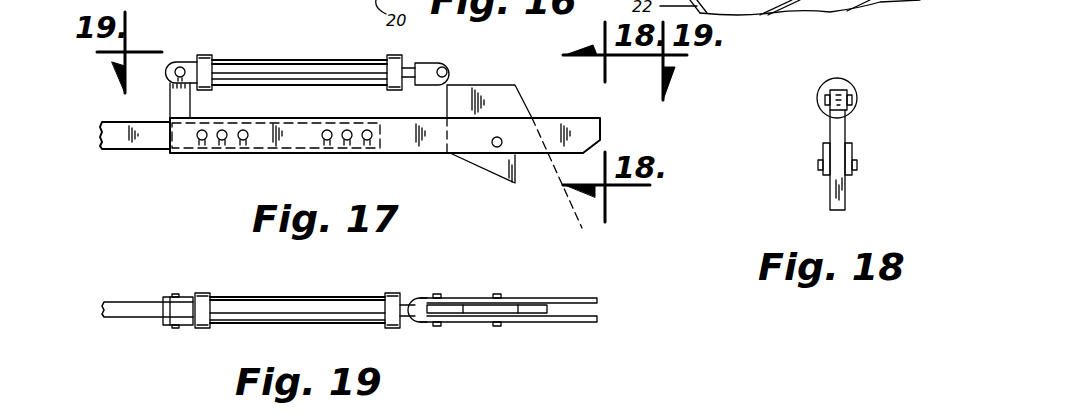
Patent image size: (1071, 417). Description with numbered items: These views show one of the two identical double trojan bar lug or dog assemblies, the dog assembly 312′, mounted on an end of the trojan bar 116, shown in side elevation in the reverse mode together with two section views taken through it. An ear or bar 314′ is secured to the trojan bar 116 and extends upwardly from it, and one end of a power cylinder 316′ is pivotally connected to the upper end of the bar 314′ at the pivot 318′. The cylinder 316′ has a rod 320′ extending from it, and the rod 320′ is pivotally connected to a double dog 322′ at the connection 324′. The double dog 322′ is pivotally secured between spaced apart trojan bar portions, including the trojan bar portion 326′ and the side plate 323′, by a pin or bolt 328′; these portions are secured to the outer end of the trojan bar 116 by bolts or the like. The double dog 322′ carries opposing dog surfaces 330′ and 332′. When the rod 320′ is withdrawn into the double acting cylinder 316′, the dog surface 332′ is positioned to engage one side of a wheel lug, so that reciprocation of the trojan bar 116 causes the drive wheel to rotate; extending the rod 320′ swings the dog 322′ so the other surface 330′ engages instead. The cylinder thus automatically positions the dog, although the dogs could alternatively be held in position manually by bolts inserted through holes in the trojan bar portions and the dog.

In FIG. 17, the trojan bar 116 is at (145, 142).
In FIG. 19, the trojan bar 116 is at (128, 307).
In FIG. 17, the double trojan bar lug or dog assembly 312′ is at (307, 56).
In FIG. 18, the double trojan bar lug or dog assembly 312′ is at (857, 78).
In FIG. 19, the double trojan bar lug or dog assembly 312′ is at (355, 294).
In FIG. 17, the ear or bar 314′ is at (171, 105).
In FIG. 19, the ear or bar 314′ is at (178, 307).
In FIG. 17, the power cylinder 316′ is at (252, 60).
In FIG. 18, the power cylinder 316′ is at (835, 83).
In FIG. 19, the power cylinder 316′ is at (305, 302).
In FIG. 17, the pivotal connection 318′ is at (180, 66).
In FIG. 19, the pivotal connection 318′ is at (177, 294).
In FIG. 17, the rod 320′ is at (409, 64).
In FIG. 19, the rod 320′ is at (413, 310).
In FIG. 17, the double dog 322′ is at (507, 98).
In FIG. 18, the double dog 322′ is at (833, 127).
In FIG. 19, the double dog 322′ is at (533, 309).
In FIG. 18, the side plate 323′ is at (852, 147).
In FIG. 19, the side plate 323′ is at (596, 300).
In FIG. 17, the pivotal connection of rod to double dog 324′ is at (448, 70).
In FIG. 18, the pivotal connection of rod to double dog 324′ is at (857, 100).
In FIG. 19, the pivotal connection of rod to double dog 324′ is at (437, 294).
In FIG. 17, the trojan bar portion 326′ is at (592, 128).
In FIG. 18, the trojan bar portion 326′ is at (825, 157).
In FIG. 19, the trojan bar portion 326′ is at (598, 318).
In FIG. 17, the pin or bolt 328′ is at (497, 148).
In FIG. 18, the pin or bolt 328′ is at (857, 164).
In FIG. 19, the pin or bolt 328′ is at (497, 327).
In FIG. 17, the dog surface 330′ is at (583, 240).
In FIG. 18, the dog surface 330′ is at (831, 183).
In FIG. 19, the dog surface 330′ is at (585, 241).
In FIG. 17, the dog surface 332′ is at (513, 172).
In FIG. 18, the dog surface 332′ is at (845, 195).